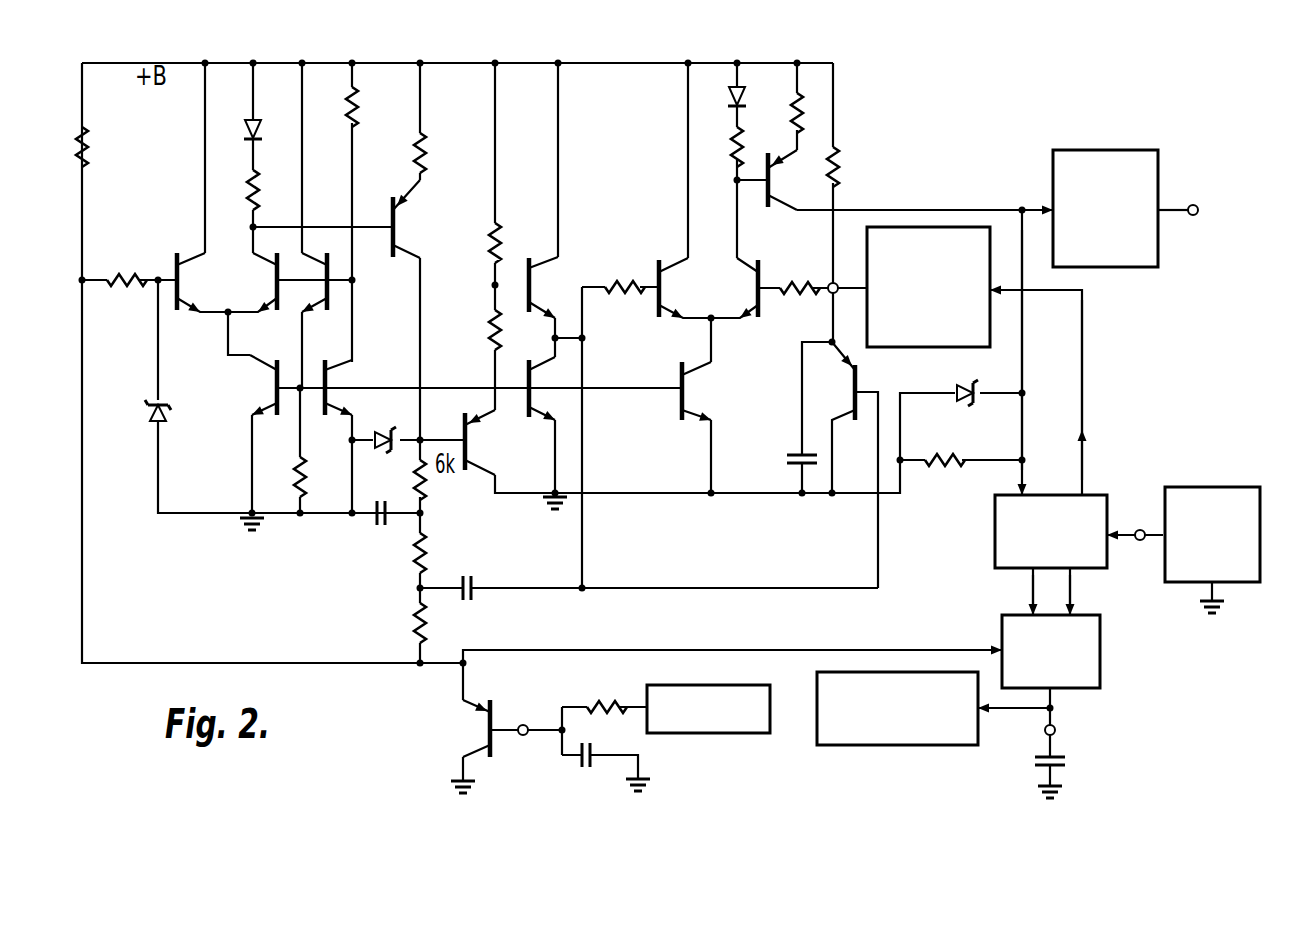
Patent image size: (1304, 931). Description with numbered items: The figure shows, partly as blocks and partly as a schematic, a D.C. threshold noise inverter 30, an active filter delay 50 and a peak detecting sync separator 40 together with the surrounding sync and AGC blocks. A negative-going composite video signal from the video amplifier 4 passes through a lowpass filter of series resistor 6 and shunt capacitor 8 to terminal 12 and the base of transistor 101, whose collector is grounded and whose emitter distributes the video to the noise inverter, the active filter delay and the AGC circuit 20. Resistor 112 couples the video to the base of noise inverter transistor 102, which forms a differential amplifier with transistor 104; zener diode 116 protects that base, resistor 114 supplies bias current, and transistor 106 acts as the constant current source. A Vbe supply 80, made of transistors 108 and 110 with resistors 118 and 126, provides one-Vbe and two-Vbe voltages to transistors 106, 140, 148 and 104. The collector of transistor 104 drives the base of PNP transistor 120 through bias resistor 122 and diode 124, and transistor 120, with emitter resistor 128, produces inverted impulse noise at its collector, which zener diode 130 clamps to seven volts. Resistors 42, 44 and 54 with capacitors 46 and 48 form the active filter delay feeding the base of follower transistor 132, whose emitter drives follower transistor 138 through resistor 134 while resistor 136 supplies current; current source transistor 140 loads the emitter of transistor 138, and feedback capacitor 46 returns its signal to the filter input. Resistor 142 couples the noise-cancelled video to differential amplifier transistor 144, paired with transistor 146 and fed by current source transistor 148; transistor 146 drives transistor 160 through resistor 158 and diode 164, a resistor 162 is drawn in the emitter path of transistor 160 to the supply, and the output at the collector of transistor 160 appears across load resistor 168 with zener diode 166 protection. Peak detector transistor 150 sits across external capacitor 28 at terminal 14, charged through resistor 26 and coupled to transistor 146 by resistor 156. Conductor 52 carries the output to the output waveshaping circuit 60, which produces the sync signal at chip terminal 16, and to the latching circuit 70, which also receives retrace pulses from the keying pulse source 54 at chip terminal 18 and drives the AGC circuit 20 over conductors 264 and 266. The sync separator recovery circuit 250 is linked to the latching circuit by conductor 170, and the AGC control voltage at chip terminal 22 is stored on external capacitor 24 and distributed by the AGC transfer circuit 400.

The video amplifier 4 is at (703, 736).
The series resistor 6 is at (612, 700).
The shunt capacitor 8 is at (596, 754).
The terminal 12 is at (524, 724).
The terminal 14 is at (839, 284).
The chip terminal 16 is at (1192, 202).
The chip terminal 18 is at (1140, 529).
The AGC circuit 20 is at (1102, 645).
The chip terminal 22 is at (1056, 730).
The external capacitor 24 is at (1068, 760).
The resistor 26 is at (840, 168).
The peak detector capacitor 28 is at (792, 456).
The D.C. threshold noise inverter 30 is at (243, 249).
The peak detecting sync separator 40 is at (770, 354).
The resistor 42 is at (410, 623).
The resistor 44 is at (410, 560).
The feedback capacitor 46 is at (476, 582).
The capacitor 48 is at (370, 523).
The active filter delay 50 is at (473, 533).
The conductor 52 is at (1024, 348).
The keying pulse source 54 is at (1218, 486).
The output waveshaping circuit 60 is at (1118, 270).
The latching circuit 70 is at (994, 531).
The Vbe supply 80 is at (335, 346).
The transistor 101 is at (486, 736).
The noise inverter transistor 102 is at (179, 280).
The noise inverter transistor 104 is at (275, 282).
The transistor 106 is at (275, 383).
The transistor 108 is at (340, 277).
The transistor 110 is at (335, 374).
The resistor 112 is at (118, 278).
The resistor 114 is at (90, 150).
The zener diode 116 is at (152, 418).
The resistor 118 is at (296, 464).
The PNP transistor 120 is at (396, 218).
The bias resistor 122 is at (248, 183).
The diode 124 is at (258, 131).
The resistor 126 is at (360, 110).
The resistor 128 is at (430, 160).
The zener diode 130 is at (388, 432).
The follower transistor 132 is at (469, 444).
The resistor 134 is at (485, 333).
The resistor 136 is at (488, 254).
The follower transistor 138 is at (532, 279).
The current source transistor 140 is at (524, 378).
The resistor 142 is at (614, 283).
The differential amplifier transistor 144 is at (662, 287).
The differential amplifier transistor 146 is at (757, 289).
The transistor 148 is at (686, 384).
The peak detector transistor 150 is at (851, 396).
The resistor 156 is at (804, 282).
The resistor 158 is at (732, 131).
The transistor 160 is at (771, 181).
The resistor 800 162 is at (790, 114).
The diode 164 is at (730, 99).
The zener diode 166 is at (966, 404).
The load resistor 168 is at (950, 453).
The conductor 170 is at (1085, 347).
The sync separator recovery circuit 250 is at (913, 349).
The conductor 264 is at (1031, 583).
The conductor 266 is at (1072, 583).
The AGC transfer circuit 400 is at (898, 746).